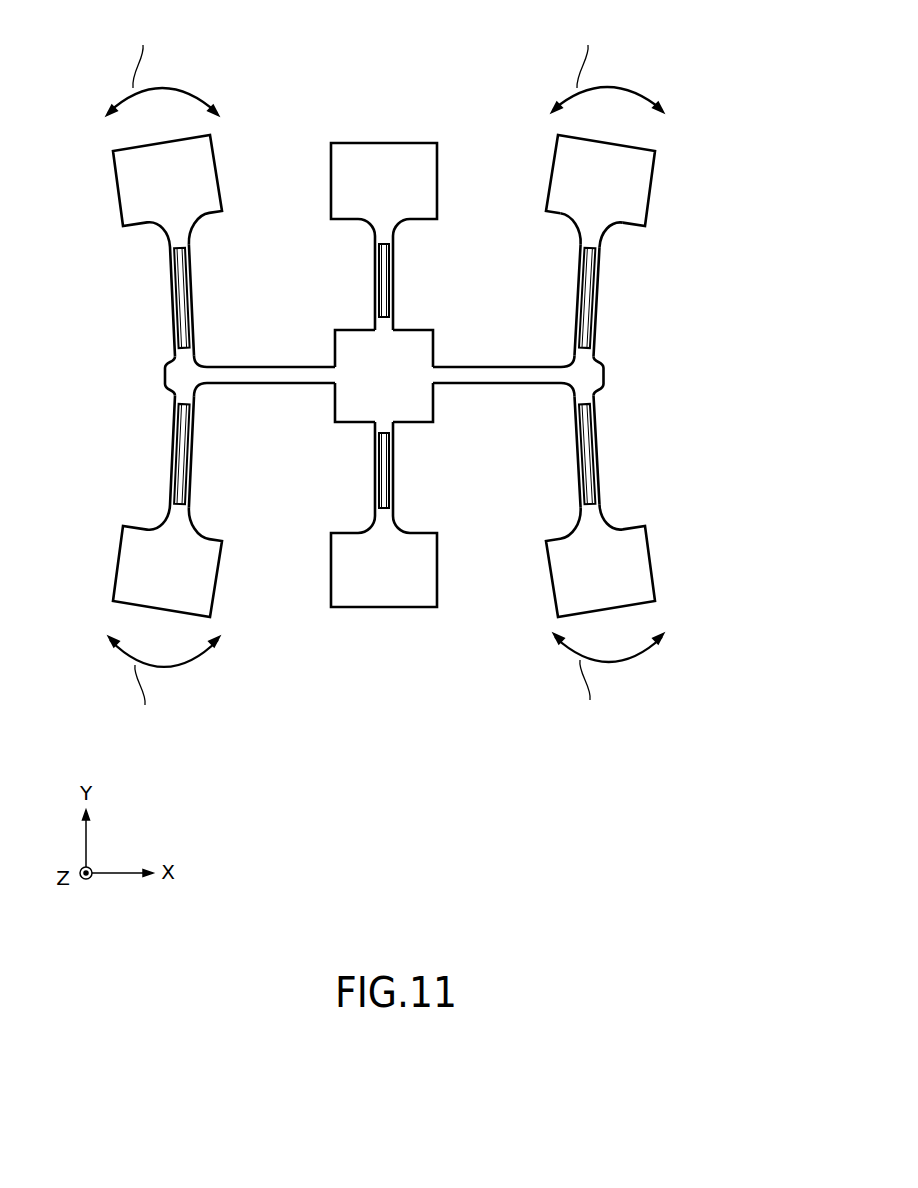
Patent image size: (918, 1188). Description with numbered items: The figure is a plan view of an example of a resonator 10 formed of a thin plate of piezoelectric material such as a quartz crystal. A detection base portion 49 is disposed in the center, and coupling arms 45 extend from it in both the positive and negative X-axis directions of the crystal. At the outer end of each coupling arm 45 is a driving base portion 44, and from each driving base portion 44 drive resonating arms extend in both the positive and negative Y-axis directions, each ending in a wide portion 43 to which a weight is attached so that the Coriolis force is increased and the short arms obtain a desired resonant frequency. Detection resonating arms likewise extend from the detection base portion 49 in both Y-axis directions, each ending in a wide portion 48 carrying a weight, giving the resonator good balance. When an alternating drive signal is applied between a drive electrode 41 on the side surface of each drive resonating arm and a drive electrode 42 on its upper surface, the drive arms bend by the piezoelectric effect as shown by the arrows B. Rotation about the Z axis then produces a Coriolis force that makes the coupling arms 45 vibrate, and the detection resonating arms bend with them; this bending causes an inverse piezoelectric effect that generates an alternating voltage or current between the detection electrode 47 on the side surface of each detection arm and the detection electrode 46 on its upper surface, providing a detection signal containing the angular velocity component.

The resonator 10 is at (694, 33).
The drive electrode 41 is at (595, 316).
The drive electrode 42 is at (602, 277).
The wide portion 43 is at (557, 165).
The driving base portion 44 is at (605, 375).
The coupling arm 45 is at (489, 379).
The detection electrode 46 is at (388, 283).
The detection electrode 47 is at (378, 278).
The wide portion 48 is at (358, 150).
The detection base portion 49 is at (352, 350).